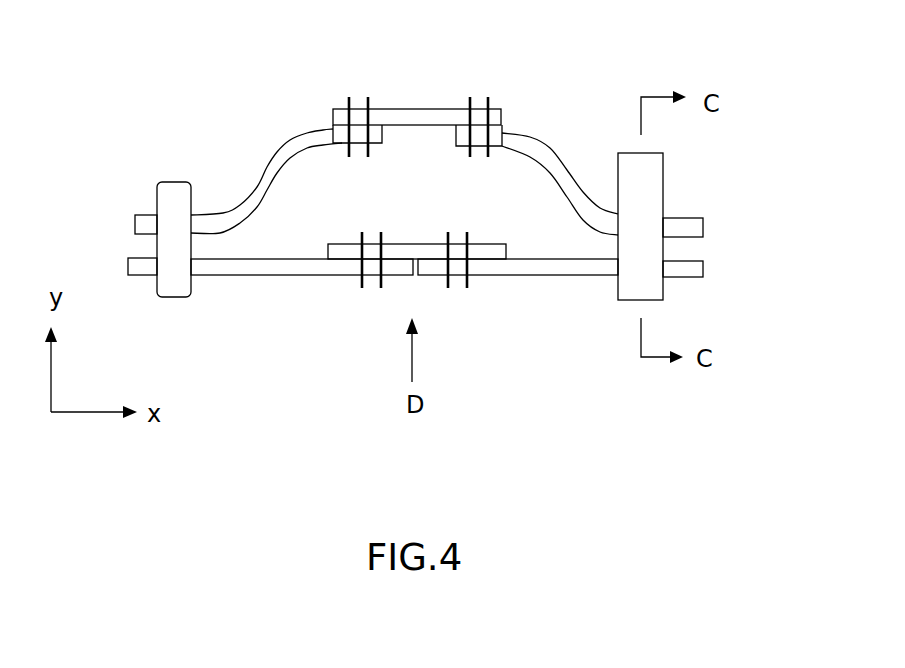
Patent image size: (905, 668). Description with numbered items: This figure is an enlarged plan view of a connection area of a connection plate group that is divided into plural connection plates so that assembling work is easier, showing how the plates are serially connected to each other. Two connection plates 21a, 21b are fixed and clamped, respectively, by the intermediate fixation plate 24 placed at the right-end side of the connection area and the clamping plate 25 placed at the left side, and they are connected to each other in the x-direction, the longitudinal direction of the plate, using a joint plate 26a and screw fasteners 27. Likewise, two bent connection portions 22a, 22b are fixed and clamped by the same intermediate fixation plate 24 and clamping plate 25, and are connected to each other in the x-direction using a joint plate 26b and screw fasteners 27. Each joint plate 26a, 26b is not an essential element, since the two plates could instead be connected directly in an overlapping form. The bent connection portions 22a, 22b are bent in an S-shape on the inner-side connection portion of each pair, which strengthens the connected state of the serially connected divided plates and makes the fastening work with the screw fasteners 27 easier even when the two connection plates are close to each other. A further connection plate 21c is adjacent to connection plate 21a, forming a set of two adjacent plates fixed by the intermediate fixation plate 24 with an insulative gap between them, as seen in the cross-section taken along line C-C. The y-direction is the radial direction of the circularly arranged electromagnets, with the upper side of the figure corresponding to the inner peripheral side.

The connection plate 21a is at (518, 320).
The connection plate 21b is at (270, 319).
The connection plate 21c is at (729, 267).
The bent connection portion 22a is at (537, 138).
The bent connection portion 22b is at (258, 162).
The intermediate fixation plate 24 is at (699, 220).
The clamping plate 25 is at (124, 216).
The joint plate 26a is at (417, 220).
The joint plate 26b is at (417, 70).
The screw fasteners 27 is at (376, 203).